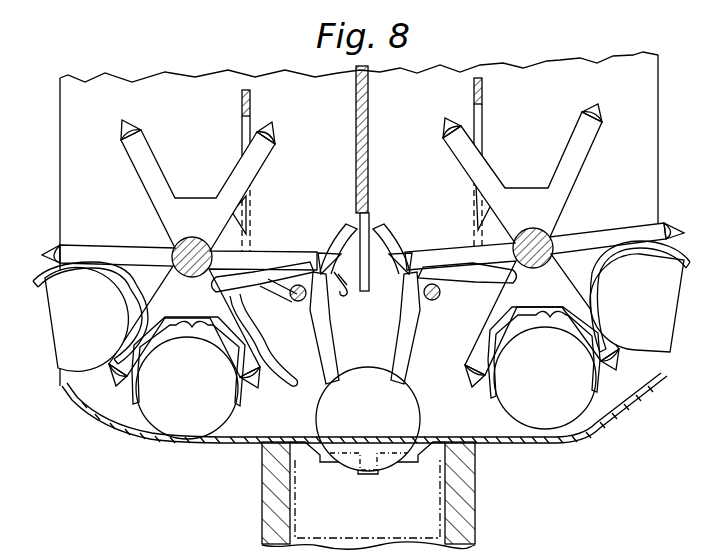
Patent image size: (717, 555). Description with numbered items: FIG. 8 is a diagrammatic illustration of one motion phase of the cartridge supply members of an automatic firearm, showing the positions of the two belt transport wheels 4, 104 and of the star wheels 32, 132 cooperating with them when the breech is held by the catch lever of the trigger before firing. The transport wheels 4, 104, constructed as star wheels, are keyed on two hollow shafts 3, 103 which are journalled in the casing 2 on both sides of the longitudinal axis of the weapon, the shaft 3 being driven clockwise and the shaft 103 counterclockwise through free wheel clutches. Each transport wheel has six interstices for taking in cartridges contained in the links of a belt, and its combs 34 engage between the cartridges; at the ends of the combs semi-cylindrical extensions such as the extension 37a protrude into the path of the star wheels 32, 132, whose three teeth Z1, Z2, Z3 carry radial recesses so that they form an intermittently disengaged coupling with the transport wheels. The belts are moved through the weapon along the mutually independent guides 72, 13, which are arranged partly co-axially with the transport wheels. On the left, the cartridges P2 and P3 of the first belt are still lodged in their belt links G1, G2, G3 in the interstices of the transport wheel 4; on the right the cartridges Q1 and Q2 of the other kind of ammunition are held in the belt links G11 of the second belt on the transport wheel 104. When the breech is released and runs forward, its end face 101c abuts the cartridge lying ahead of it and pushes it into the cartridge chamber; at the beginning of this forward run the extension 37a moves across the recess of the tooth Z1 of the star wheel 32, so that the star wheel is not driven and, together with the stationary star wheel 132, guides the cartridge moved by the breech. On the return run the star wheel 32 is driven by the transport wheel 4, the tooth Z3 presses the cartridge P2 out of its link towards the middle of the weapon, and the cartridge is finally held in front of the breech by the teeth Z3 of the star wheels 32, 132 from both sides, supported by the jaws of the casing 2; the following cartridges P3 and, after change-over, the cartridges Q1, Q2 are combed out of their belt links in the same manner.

The guide 13 is at (397, 108).
The comb 34 is at (135, 158).
The transport wheel 4 is at (157, 215).
The hollow shaft 3 is at (180, 255).
The belt link G3 is at (35, 281).
The tooth Z2 is at (226, 283).
The tooth Z1 is at (347, 247).
The star wheel 32 is at (292, 300).
The extension 37a is at (337, 292).
The belt link G1 is at (281, 370).
The tooth Z3 is at (400, 358).
The star wheel 132 is at (454, 297).
The hollow shaft 103 is at (552, 228).
The transport wheel 104 is at (577, 228).
The belt link G11 is at (493, 393).
The cartridge Q1 is at (517, 414).
The cartridge Q2 is at (655, 352).
The casing 2 is at (410, 443).
The end face 101c is at (367, 454).
The cartridge P3 is at (73, 363).
The belt link G2 is at (242, 400).
The cartridge P2 is at (223, 417).
The guide 72 is at (221, 441).